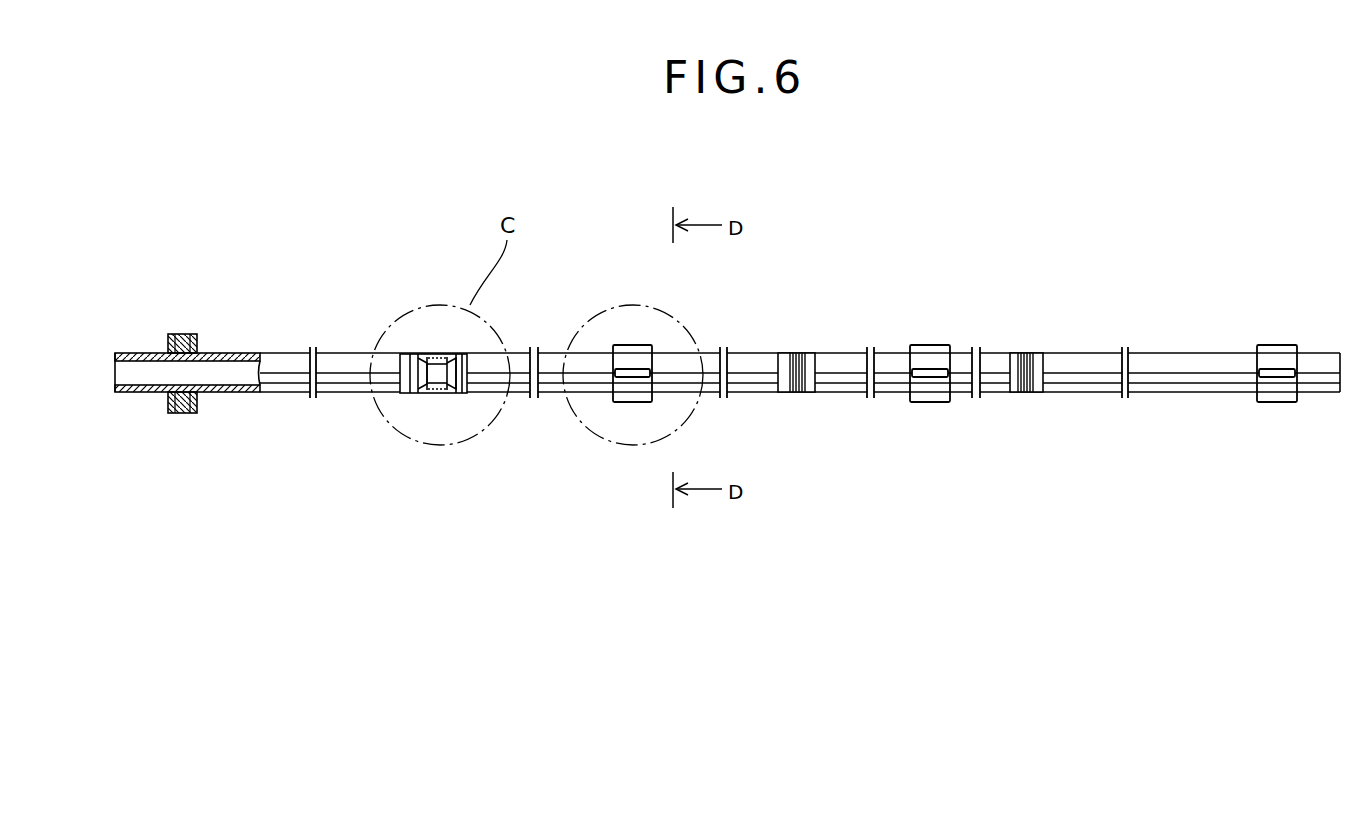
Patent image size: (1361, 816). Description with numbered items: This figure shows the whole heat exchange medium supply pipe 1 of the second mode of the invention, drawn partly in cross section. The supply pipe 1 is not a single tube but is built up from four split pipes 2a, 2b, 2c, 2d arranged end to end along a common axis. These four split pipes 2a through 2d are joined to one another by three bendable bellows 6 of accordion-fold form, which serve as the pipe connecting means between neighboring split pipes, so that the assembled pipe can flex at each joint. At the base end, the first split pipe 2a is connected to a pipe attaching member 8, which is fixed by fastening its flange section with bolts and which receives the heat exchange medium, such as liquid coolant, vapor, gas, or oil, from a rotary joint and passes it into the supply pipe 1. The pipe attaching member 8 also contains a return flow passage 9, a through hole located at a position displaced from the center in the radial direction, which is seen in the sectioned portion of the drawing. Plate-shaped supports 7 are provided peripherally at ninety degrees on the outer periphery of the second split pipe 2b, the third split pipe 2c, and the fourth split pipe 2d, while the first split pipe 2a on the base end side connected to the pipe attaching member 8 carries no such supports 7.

The heat exchange medium supply pipe 1 is at (1001, 237).
The first split pipe 2a is at (340, 395).
The second split pipe 2b is at (552, 395).
The third split pipe 2c is at (890, 395).
The fourth split pipe 2d is at (1078, 395).
The bellows 6 is at (440, 354).
The support 7 is at (637, 344).
The pipe attaching member 8 is at (189, 334).
The return flow passage 9 is at (200, 410).